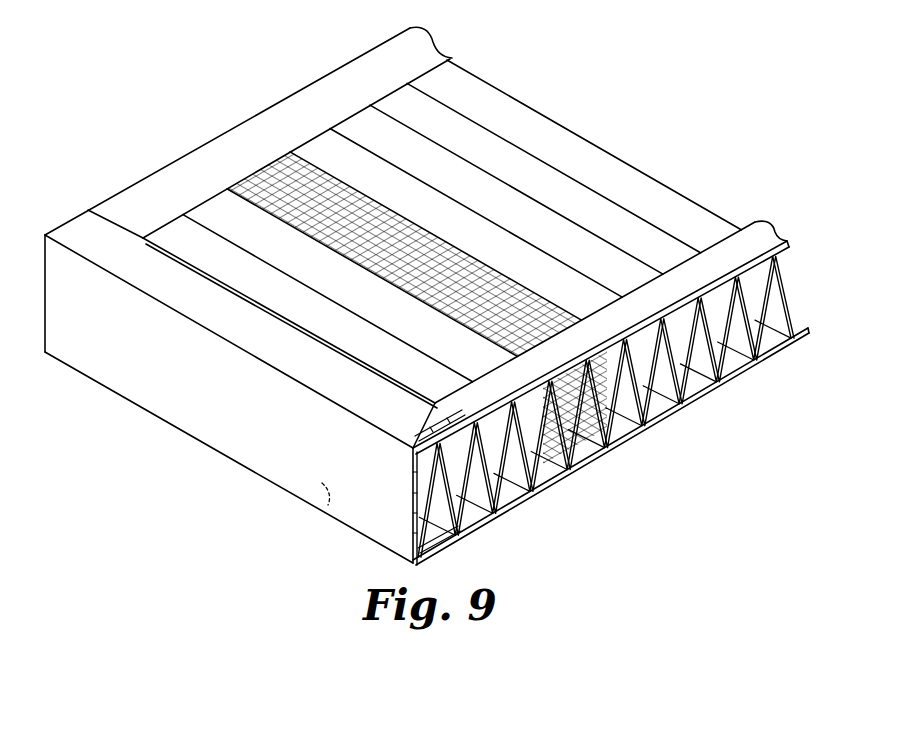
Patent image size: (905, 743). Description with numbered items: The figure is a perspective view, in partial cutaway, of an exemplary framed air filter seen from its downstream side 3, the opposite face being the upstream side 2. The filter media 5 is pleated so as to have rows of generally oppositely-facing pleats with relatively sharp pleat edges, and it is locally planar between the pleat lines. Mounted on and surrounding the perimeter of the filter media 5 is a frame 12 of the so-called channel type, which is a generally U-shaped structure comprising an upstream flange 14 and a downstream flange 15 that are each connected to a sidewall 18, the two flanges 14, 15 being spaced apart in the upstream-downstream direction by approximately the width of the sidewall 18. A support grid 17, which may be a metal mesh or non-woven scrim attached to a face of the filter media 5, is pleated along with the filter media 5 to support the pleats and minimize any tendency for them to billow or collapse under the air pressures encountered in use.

The upstream side 2 is at (698, 478).
The downstream side 3 is at (288, 52).
The filter media 5 is at (786, 326).
The frame 12 is at (227, 445).
The upstream flange 14 is at (83, 233).
The downstream flange 15 is at (330, 510).
The support grid 17 is at (488, 297).
The sidewall 18 is at (120, 348).